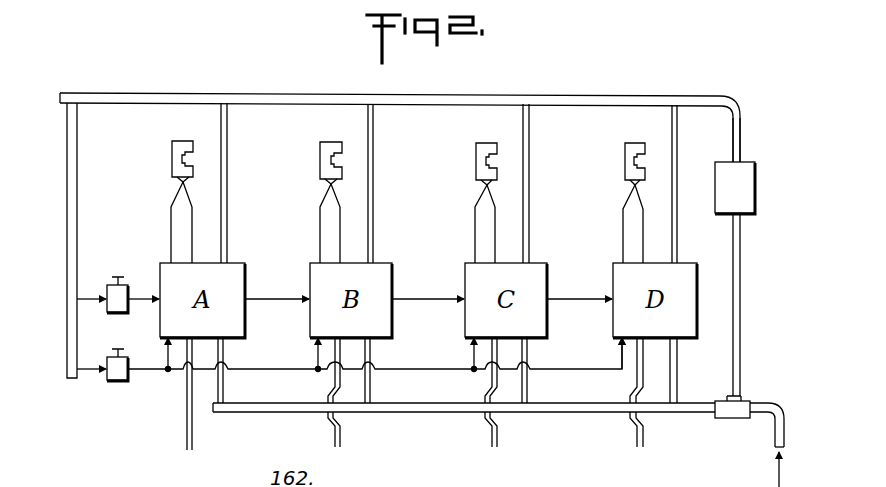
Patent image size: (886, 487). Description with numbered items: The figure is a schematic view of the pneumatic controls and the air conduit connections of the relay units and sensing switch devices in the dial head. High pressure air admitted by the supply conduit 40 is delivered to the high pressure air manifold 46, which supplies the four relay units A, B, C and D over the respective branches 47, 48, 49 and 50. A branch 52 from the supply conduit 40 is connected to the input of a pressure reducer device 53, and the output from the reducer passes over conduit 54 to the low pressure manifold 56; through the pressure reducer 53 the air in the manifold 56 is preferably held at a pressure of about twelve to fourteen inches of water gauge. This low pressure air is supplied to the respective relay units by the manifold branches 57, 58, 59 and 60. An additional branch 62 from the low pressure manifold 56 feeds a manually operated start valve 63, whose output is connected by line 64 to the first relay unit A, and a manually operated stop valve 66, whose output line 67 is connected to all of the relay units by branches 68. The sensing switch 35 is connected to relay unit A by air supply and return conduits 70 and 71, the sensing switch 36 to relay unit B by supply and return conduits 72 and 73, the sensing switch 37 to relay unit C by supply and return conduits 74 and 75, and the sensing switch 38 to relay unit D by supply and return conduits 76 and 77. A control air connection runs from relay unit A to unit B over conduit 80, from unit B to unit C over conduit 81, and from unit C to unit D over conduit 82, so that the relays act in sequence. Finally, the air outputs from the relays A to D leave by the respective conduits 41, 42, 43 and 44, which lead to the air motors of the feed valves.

The sensing switch 35 is at (182, 141).
The sensing switch 36 is at (330, 142).
The sensing switch 37 is at (486, 143).
The sensing switch 38 is at (634, 143).
The conduit 40 is at (785, 421).
The conduit 41 is at (186, 421).
The conduit 42 is at (331, 441).
The conduit 43 is at (491, 441).
The conduit 44 is at (634, 441).
The high pressure air manifold 46 is at (560, 414).
The branch 47 is at (224, 396).
The branch 48 is at (371, 396).
The branch 49 is at (527, 397).
The branch 50 is at (679, 373).
The branch 52 is at (741, 300).
The pressure reducer device 53 is at (726, 198).
The conduit 54 is at (742, 130).
The low pressure manifold 56 is at (410, 93).
The manifold branch 57 is at (228, 133).
The manifold branch 58 is at (374, 131).
The manifold branch 59 is at (530, 131).
The manifold branch 60 is at (678, 132).
The branch 62 is at (78, 136).
The start valve 63 is at (121, 312).
The line 64 is at (128, 293).
The stop valve 66 is at (113, 382).
The output line 67 is at (136, 375).
The branches 68 is at (166, 352).
The air supply conduit 70 is at (171, 206).
The return conduit 71 is at (192, 207).
The supply conduit 72 is at (320, 206).
The return conduit 73 is at (340, 207).
The supply conduit 74 is at (475, 208).
The return conduit 75 is at (495, 207).
The supply conduit 76 is at (623, 210).
The return conduit 77 is at (643, 208).
The conduit 80 is at (260, 293).
The conduit 81 is at (414, 293).
The conduit 82 is at (564, 293).